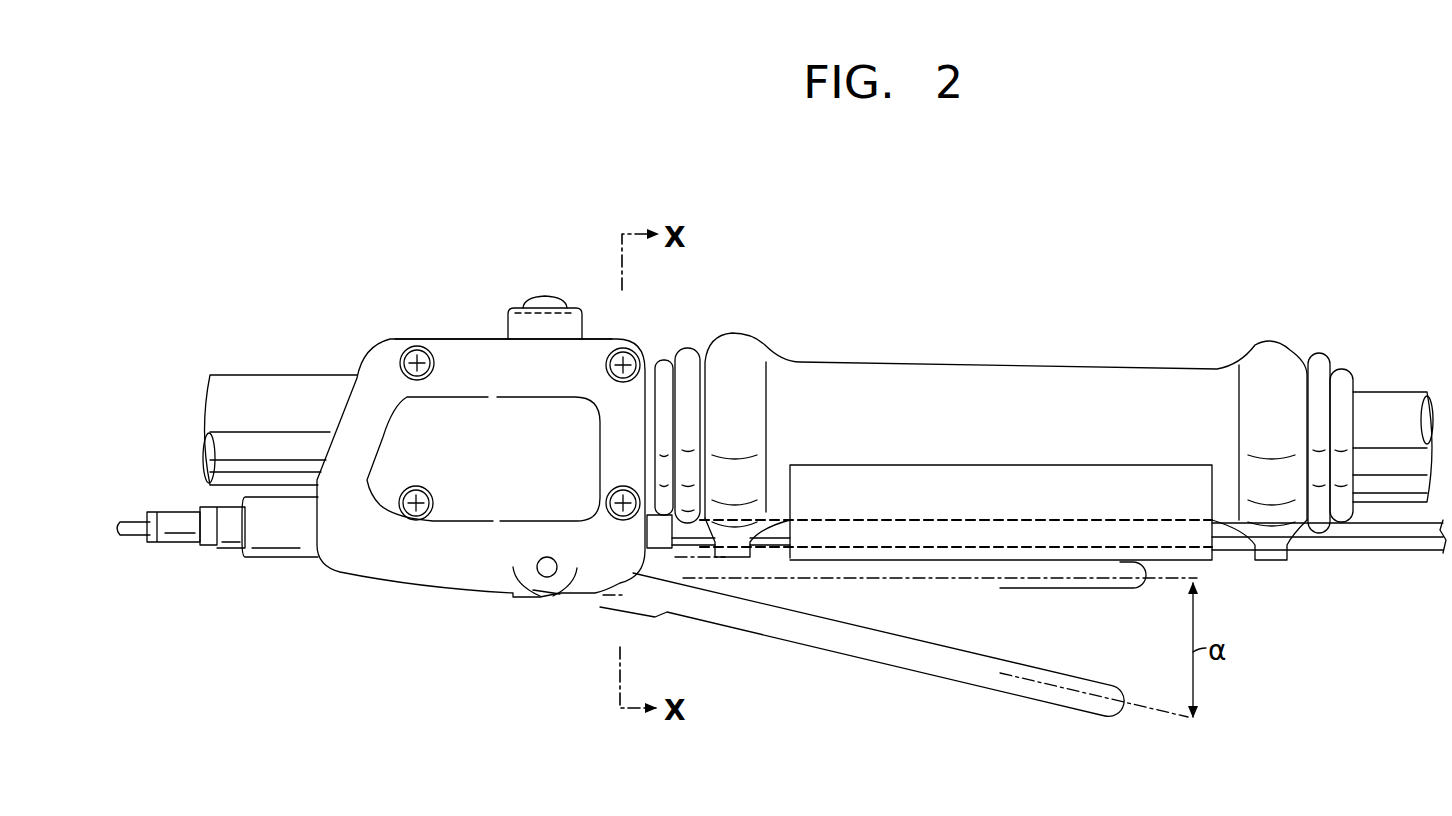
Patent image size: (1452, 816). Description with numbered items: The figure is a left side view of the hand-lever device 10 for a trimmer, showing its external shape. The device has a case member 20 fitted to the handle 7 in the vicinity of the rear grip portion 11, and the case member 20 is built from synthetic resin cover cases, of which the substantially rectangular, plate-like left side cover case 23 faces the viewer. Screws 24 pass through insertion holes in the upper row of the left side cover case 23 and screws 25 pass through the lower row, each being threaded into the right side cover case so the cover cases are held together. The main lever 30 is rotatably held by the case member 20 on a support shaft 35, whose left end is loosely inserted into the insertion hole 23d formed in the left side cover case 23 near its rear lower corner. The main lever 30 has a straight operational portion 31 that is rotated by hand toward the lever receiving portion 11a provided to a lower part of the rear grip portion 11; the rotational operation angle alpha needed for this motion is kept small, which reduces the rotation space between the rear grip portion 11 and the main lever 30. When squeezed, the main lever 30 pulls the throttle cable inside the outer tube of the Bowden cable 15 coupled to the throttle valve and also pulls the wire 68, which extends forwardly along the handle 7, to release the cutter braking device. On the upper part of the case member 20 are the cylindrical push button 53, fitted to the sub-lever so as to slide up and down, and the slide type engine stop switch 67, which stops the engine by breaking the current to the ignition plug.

The handle 7 is at (273, 385).
The hand-lever device 10 is at (427, 296).
The rear grip portion 11 is at (960, 380).
The lever receiving portion 11a is at (993, 558).
The Bowden cable 15 is at (1363, 553).
The case member 20 is at (463, 334).
The left side cover case 23 is at (405, 562).
The insertion hole 23d is at (543, 591).
The screws 24 is at (408, 350).
The screws 25 is at (421, 488).
The main lever 30 is at (819, 600).
The straight operational portion 31 is at (1034, 667).
The support shaft 35 is at (547, 556).
The push button 53 is at (552, 298).
The engine stop switch 67 is at (512, 309).
The wire 68 is at (137, 533).